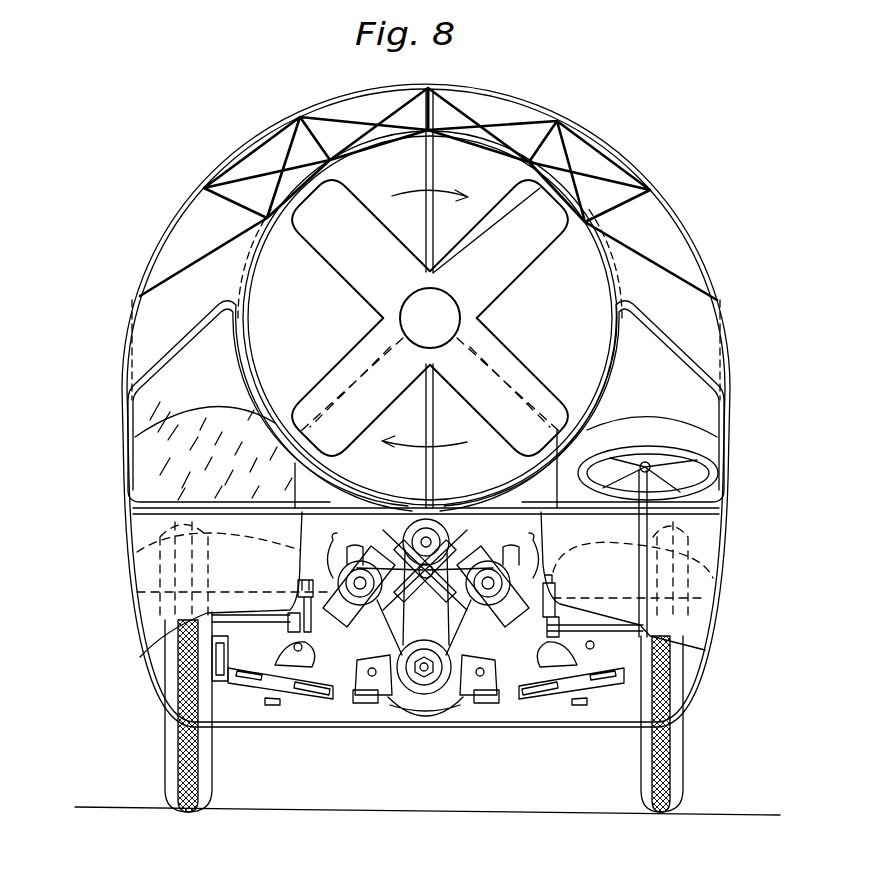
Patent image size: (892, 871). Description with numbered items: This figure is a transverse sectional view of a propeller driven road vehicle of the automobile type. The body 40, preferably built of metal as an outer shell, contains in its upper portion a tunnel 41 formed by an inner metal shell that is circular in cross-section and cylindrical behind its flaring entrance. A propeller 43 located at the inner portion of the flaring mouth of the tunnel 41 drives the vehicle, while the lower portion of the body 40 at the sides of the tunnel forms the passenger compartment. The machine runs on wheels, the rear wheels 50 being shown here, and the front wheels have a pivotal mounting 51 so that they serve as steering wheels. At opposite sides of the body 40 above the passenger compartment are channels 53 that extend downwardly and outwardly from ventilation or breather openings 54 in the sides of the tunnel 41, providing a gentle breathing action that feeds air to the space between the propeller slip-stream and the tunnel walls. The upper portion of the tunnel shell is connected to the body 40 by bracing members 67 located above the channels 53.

The body 40 is at (729, 532).
The tunnel 41 is at (403, 143).
The propeller 43 is at (385, 290).
The rear wheels 50 is at (182, 754).
The pivotal mounting 51 is at (232, 680).
The channels 53 is at (157, 312).
The ventilation or breather openings 54 is at (603, 297).
The bracing members 67 is at (527, 125).